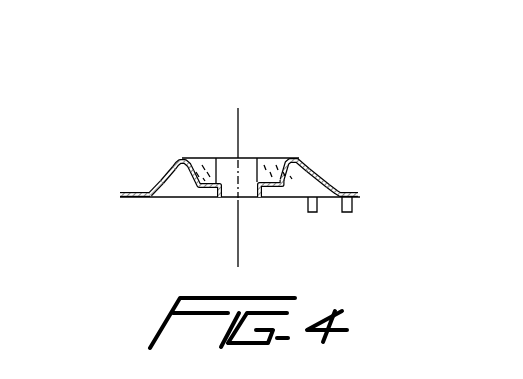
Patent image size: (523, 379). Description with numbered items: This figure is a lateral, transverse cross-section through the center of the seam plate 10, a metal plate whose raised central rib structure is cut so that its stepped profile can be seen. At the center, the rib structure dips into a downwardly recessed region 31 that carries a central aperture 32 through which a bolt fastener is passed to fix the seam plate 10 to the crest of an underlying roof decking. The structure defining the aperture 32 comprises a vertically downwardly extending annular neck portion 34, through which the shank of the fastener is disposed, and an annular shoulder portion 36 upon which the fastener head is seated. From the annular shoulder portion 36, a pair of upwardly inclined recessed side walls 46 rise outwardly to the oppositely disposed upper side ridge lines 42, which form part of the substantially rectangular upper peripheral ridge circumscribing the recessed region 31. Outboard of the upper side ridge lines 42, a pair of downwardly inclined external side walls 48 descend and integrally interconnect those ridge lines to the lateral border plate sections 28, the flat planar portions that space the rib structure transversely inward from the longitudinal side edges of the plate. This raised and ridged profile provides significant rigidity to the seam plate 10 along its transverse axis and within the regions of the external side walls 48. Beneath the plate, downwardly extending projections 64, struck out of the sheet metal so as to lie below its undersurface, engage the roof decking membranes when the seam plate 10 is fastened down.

The seam plate 10 is at (256, 150).
The lateral border plate sections 28 is at (120, 191).
The downwardly recessed region 31 is at (253, 158).
The aperture 32 is at (252, 197).
The annular neck portion 34 is at (226, 197).
The annular shoulder portion 36 is at (215, 158).
The upper side ridge lines 42 is at (167, 163).
The upwardly inclined recessed side walls 46 is at (157, 180).
The downwardly inclined external side walls 48 is at (137, 187).
The downwardly extending projections 64 is at (314, 212).